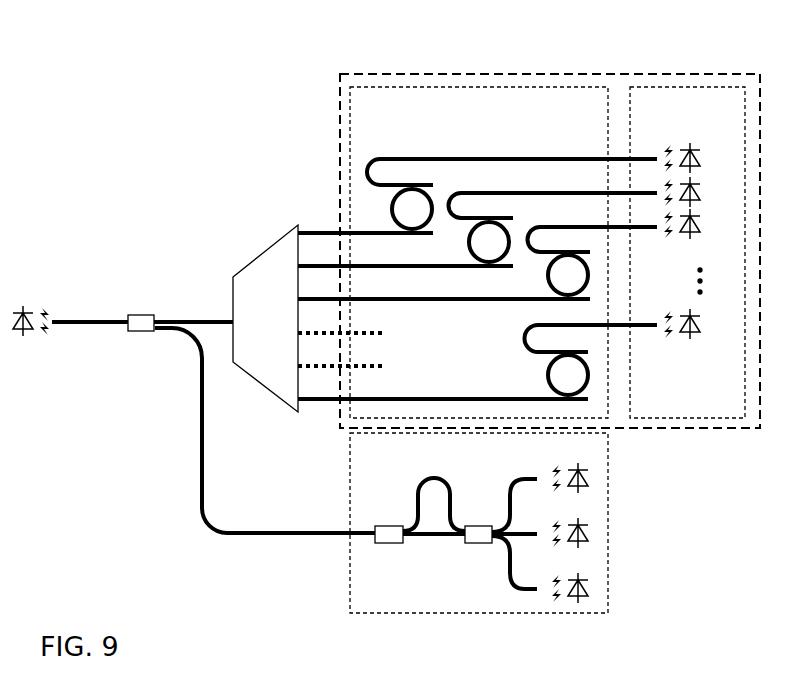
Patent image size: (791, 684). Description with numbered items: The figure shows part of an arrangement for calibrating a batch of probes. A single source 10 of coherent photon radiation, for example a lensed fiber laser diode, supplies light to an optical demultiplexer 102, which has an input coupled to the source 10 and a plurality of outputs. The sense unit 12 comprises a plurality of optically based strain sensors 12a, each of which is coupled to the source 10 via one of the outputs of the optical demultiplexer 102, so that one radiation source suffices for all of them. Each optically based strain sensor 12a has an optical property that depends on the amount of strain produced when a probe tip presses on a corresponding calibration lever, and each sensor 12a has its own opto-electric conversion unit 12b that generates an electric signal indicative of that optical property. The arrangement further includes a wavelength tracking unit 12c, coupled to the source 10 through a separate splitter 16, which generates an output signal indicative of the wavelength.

The source of coherent photon radiation 10 is at (24, 343).
The splitter 16 is at (137, 322).
The optical demultiplexer 102 is at (253, 285).
The sense unit 12 is at (530, 73).
The optically based strain sensor 12a is at (557, 378).
The opto-electric conversion unit 12b is at (690, 318).
The wavelength tracking unit 12c is at (377, 568).